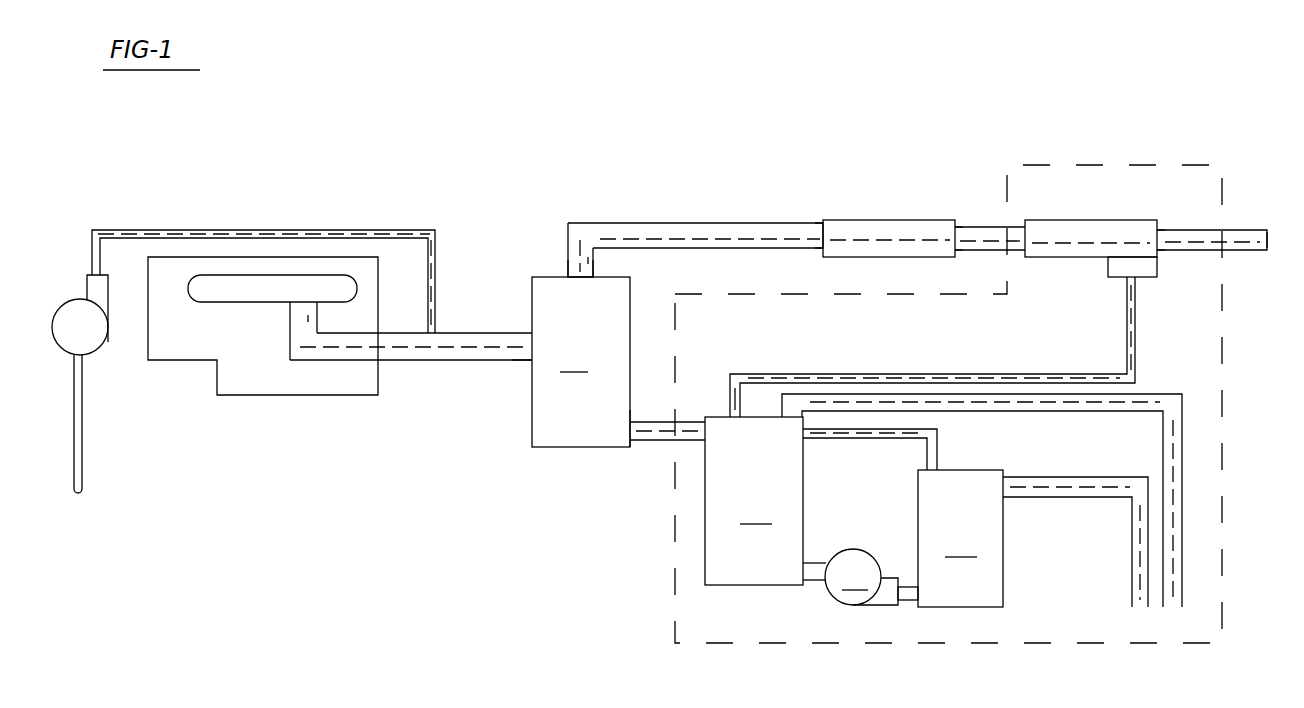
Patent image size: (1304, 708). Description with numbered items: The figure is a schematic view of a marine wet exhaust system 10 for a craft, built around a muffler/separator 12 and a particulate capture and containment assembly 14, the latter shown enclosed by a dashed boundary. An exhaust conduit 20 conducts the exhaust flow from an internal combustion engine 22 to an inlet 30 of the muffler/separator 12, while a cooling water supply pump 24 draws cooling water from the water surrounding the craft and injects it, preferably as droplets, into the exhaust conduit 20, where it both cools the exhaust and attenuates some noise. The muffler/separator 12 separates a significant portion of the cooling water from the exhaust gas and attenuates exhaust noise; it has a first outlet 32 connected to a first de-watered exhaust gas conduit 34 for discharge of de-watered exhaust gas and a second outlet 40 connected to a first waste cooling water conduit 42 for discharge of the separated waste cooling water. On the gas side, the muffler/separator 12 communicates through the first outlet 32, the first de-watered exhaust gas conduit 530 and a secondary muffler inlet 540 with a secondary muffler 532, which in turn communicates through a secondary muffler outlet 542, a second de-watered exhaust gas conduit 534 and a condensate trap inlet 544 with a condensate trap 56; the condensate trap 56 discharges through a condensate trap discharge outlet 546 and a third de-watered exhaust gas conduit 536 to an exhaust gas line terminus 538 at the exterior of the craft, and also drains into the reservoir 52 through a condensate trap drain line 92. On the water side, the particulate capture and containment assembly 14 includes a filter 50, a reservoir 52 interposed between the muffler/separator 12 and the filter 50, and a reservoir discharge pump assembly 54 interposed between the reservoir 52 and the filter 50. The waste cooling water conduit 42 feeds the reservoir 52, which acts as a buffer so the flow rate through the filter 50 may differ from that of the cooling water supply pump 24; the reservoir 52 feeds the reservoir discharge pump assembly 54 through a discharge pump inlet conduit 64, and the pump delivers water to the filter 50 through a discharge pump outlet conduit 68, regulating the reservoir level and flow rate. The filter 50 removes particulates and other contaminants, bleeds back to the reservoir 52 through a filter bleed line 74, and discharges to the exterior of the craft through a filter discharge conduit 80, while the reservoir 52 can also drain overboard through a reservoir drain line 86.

The wet exhaust system 10 is at (336, 485).
The muffler/separator 12 is at (581, 362).
The particulate capture and containment assembly 14 is at (686, 603).
The exhaust conduit 20 is at (465, 335).
The internal combustion engine 22 is at (235, 372).
The cooling water supply pump 24 is at (95, 346).
The inlet 30 is at (528, 349).
The first outlet 32 is at (578, 273).
The first de-watered exhaust gas conduit 34 is at (580, 228).
The second outlet 40 is at (630, 428).
The first waste cooling water conduit 42 is at (648, 442).
The filter 50 is at (960, 538).
The reservoir 52 is at (754, 501).
The reservoir discharge pump assembly 54 is at (861, 577).
The condensate trap 56 is at (1077, 232).
The discharge pump inlet conduit 64 is at (812, 585).
The discharge pump outlet conduit 68 is at (910, 598).
The filter bleed line 74 is at (862, 438).
The filter discharge conduit 80 is at (1055, 487).
The reservoir drain line 86 is at (1142, 402).
The condensate trap drain line 92 is at (905, 378).
The first de-watered exhaust gas conduit 530 is at (674, 225).
The secondary muffler 532 is at (897, 222).
The second de-watered exhaust gas conduit 534 is at (980, 228).
The third de-watered exhaust gas conduit 536 is at (1232, 232).
The exhaust gas line terminus 538 is at (1267, 245).
The secondary muffler inlet 540 is at (823, 240).
The secondary muffler outlet 542 is at (955, 250).
The condensate trap inlet 544 is at (1030, 248).
The condensate trap discharge outlet 546 is at (1160, 232).